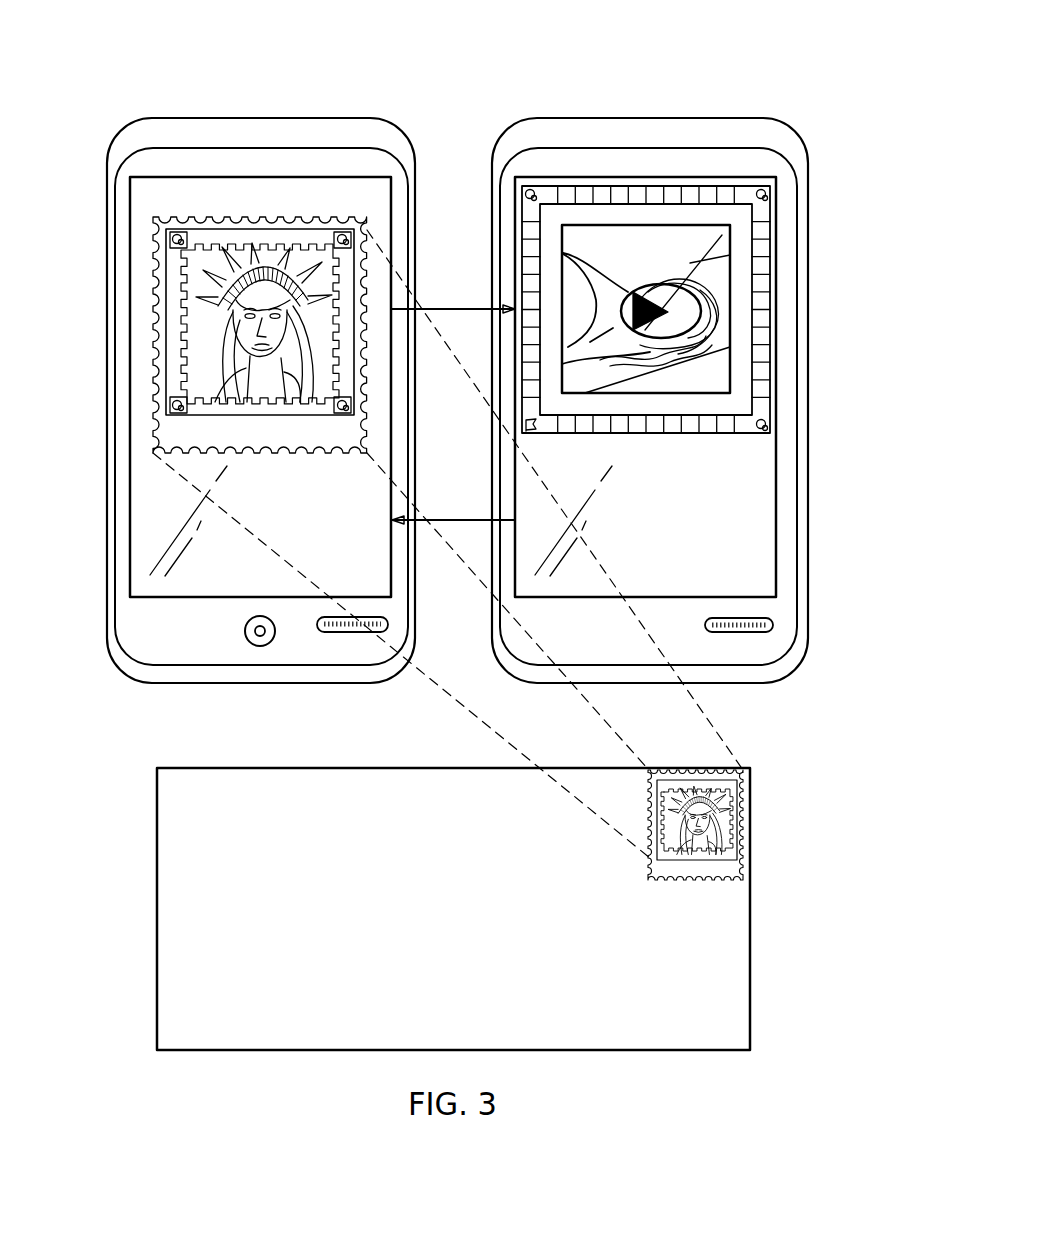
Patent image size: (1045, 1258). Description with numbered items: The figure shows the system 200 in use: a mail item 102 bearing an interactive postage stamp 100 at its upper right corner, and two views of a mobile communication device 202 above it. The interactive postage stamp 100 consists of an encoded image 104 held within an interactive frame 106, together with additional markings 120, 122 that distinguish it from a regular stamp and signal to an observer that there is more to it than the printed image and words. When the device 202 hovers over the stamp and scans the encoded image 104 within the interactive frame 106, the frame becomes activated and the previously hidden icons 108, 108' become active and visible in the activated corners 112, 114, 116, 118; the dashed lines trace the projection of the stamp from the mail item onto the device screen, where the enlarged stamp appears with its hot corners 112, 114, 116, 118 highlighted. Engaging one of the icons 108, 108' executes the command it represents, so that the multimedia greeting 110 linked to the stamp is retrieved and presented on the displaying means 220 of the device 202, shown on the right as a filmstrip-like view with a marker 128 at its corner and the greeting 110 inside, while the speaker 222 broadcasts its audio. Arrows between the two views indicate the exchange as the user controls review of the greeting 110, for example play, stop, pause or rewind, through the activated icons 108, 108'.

The interactive postage stamp 100 is at (731, 736).
The mail item 102 is at (752, 963).
The encoded image 104 is at (723, 815).
The interactive frame 106 is at (648, 868).
The embedded icon 108 is at (277, 332).
The embedded icon 108' is at (692, 361).
The multimedia greeting 110 is at (722, 348).
The activated corner 112 is at (178, 239).
The activated corner 114 is at (345, 239).
The activated corner 116 is at (345, 405).
The activated corner 118 is at (178, 405).
The additional marking 120 is at (650, 850).
The additional marking 122 is at (695, 880).
The marker 128 is at (528, 188).
The system 200 is at (230, 63).
The mobile communication device 202 is at (173, 119).
The displaying means 220 is at (718, 263).
The speaker 222 is at (387, 623).